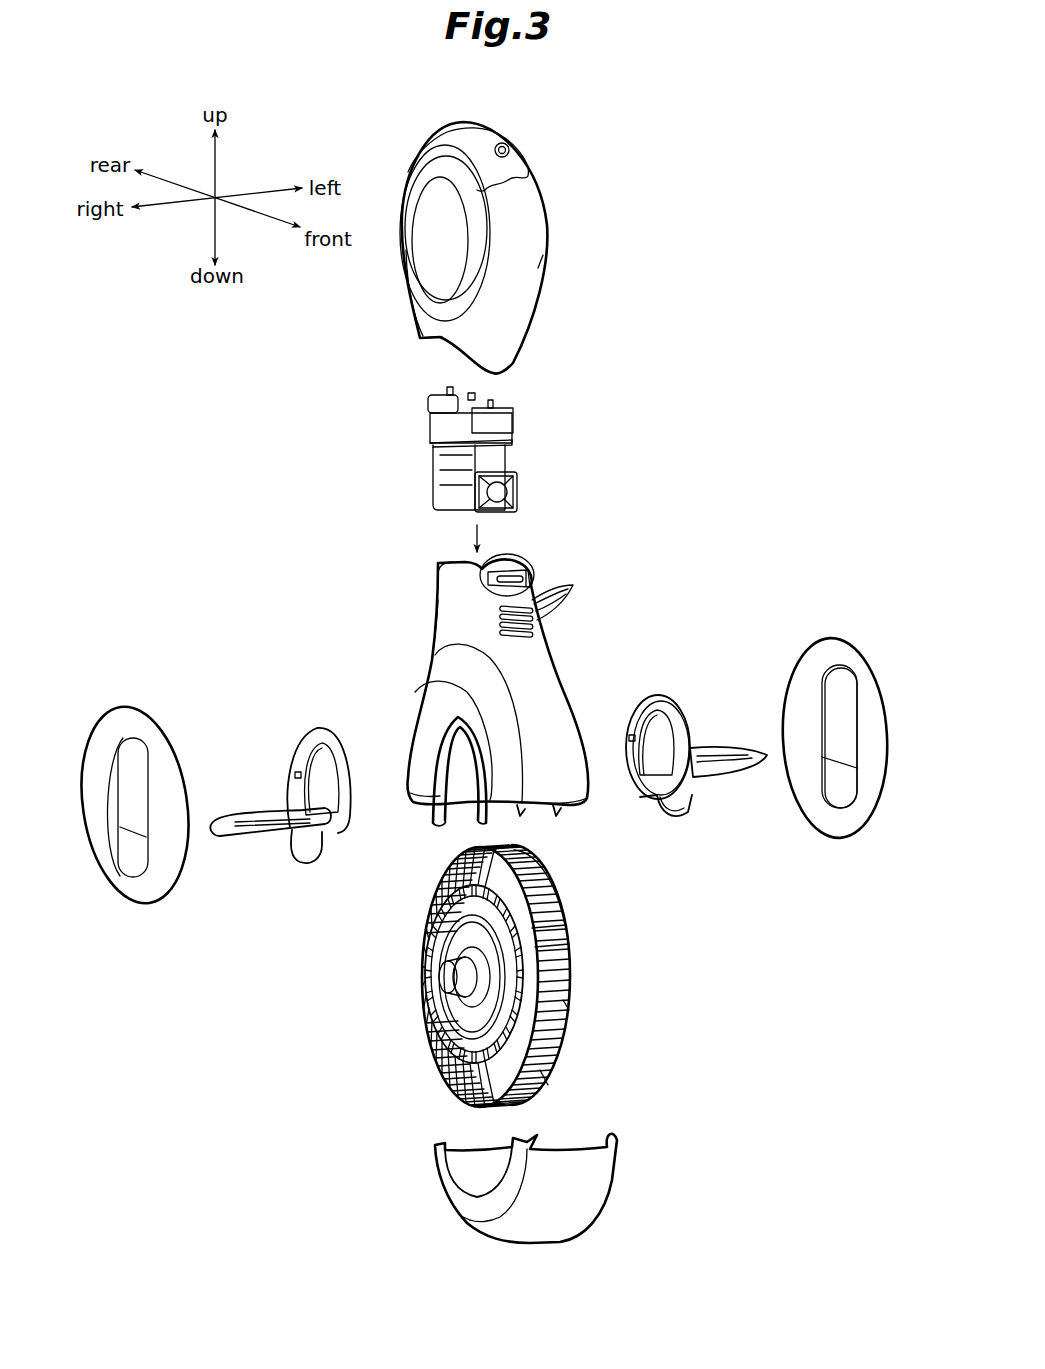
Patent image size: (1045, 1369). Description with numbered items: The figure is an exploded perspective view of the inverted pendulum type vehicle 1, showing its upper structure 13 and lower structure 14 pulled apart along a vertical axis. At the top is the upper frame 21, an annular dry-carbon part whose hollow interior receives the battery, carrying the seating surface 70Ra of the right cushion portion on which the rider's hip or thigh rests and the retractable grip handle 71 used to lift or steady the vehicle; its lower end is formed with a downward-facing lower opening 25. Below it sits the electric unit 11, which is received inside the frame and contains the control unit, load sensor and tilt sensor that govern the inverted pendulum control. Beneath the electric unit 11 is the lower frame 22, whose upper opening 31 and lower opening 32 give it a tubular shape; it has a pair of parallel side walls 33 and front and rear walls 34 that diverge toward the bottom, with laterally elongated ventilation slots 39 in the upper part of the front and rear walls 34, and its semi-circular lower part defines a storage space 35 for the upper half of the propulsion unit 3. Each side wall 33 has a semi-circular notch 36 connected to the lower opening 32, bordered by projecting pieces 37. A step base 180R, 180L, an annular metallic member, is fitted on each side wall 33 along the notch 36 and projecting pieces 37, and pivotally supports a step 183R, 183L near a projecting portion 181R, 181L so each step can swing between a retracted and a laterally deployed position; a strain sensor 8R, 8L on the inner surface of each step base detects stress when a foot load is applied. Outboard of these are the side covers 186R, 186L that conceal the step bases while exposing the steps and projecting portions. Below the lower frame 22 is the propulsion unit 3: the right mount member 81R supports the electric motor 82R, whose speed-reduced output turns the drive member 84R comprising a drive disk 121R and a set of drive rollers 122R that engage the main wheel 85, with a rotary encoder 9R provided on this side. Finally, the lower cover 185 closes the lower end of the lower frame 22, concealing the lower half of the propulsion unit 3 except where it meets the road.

The inverted pendulum type vehicle 1 is at (685, 217).
The propulsion unit 3 is at (508, 1000).
The strain sensor 8R is at (297, 775).
The strain sensor 8L is at (630, 738).
The rotary encoder 9R is at (492, 962).
The electric unit 11 is at (542, 428).
The upper structure 13 is at (563, 178).
The lower structure 14 is at (650, 562).
The upper frame 21 is at (540, 260).
The lower frame 22 is at (437, 587).
The lower opening 25 is at (430, 340).
The upper opening 31 is at (463, 560).
The lower opening 32 is at (573, 807).
The side wall 33 is at (440, 623).
The front and rear wall 34 is at (557, 680).
The storage space 35 is at (460, 780).
The semi-circular notch 36 is at (447, 767).
The projecting piece 37 is at (443, 813).
The ventilation slot 39 is at (573, 585).
The seating surface 70Ra is at (407, 203).
The grip handle 71 is at (478, 128).
The mount member 81R is at (543, 1080).
The electric motor 82R is at (563, 1008).
The drive member 84R is at (540, 885).
The main wheel 85 is at (433, 883).
The drive disk 121R is at (437, 1035).
The drive roller 122R is at (563, 963).
The step base 180R is at (310, 730).
The step base 180L is at (653, 700).
The projecting portion 181R is at (297, 850).
The projecting portion 181L is at (687, 813).
The step 183R is at (223, 820).
The step 183L is at (727, 753).
The lower cover 185 is at (595, 1192).
The side cover 186R is at (132, 712).
The side cover 186L is at (823, 647).